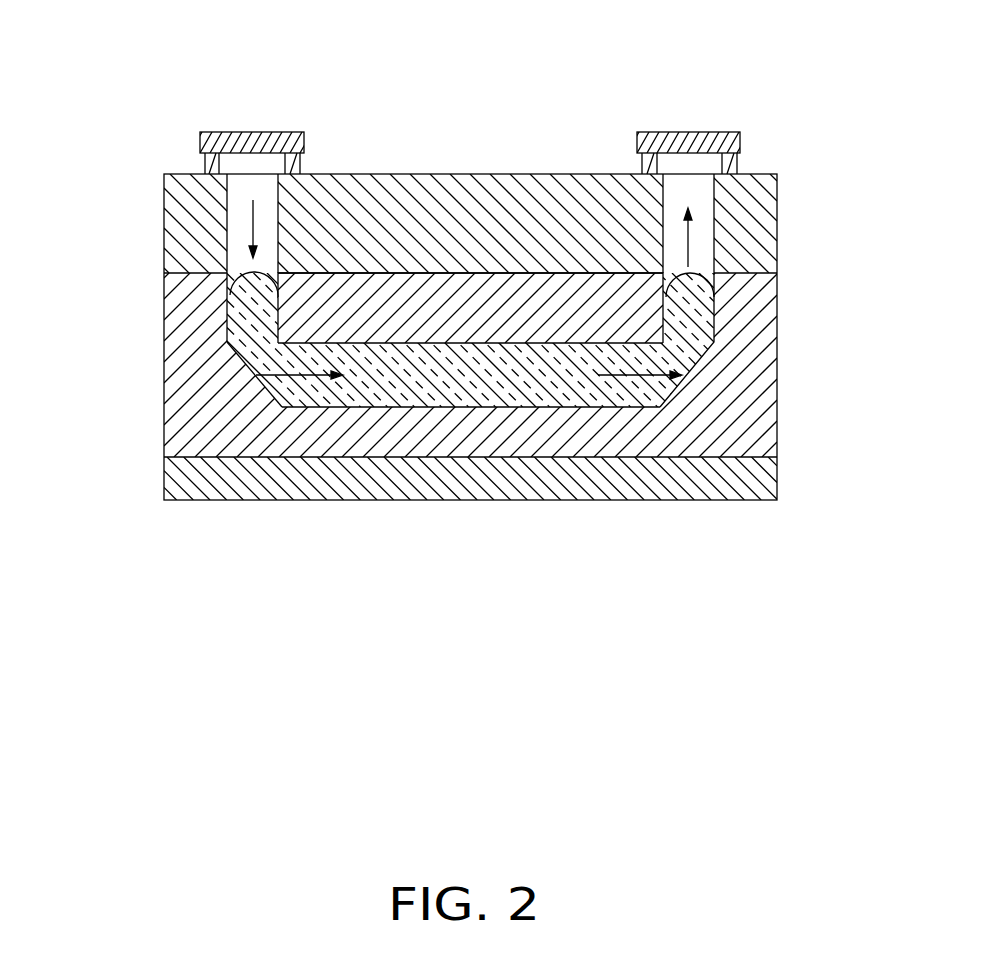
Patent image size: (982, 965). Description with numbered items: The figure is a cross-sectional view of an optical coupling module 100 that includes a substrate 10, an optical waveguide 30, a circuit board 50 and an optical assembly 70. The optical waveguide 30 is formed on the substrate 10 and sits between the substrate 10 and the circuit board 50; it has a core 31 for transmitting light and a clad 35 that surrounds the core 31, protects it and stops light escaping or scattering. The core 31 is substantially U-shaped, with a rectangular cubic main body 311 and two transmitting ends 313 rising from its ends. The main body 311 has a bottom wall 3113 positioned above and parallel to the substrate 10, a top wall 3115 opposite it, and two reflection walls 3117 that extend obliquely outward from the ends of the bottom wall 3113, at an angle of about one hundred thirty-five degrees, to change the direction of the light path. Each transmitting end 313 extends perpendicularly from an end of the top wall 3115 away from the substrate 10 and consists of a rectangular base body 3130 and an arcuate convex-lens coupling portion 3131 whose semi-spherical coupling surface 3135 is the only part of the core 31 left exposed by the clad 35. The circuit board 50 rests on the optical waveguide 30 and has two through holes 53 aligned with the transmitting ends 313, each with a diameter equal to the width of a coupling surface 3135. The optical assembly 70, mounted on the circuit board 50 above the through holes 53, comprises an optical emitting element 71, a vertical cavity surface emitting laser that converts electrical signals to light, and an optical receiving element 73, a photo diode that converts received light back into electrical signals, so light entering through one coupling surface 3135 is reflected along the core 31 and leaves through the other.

The optical coupling module 100 is at (213, 53).
The substrate 10 is at (755, 480).
The optical waveguide 30 is at (452, 417).
The core 31 is at (693, 310).
The clad 35 is at (708, 395).
The circuit board 50 is at (750, 205).
The through hole 53 is at (690, 247).
The optical assembly 70 is at (469, 105).
The optical emitting element 71 is at (305, 138).
The optical receiving element 73 is at (675, 130).
The main body 311 is at (431, 474).
The bottom wall 3113 is at (316, 407).
The top wall 3115 is at (379, 345).
The reflection wall 3117 is at (260, 385).
The transmitting end 313 is at (150, 285).
The base body 3130 is at (236, 325).
The coupling portion 3131 is at (240, 288).
The coupling surface 3135 is at (238, 262).